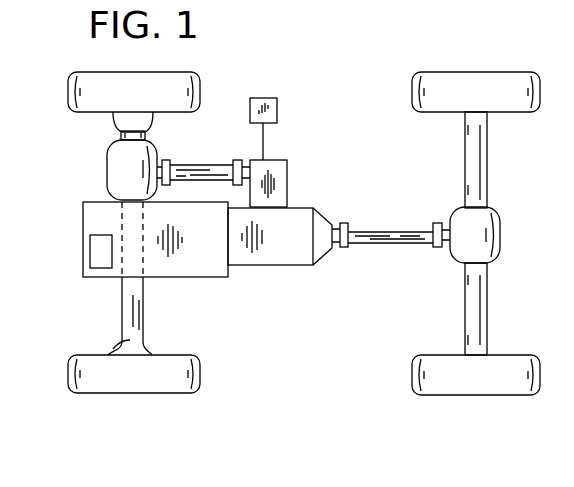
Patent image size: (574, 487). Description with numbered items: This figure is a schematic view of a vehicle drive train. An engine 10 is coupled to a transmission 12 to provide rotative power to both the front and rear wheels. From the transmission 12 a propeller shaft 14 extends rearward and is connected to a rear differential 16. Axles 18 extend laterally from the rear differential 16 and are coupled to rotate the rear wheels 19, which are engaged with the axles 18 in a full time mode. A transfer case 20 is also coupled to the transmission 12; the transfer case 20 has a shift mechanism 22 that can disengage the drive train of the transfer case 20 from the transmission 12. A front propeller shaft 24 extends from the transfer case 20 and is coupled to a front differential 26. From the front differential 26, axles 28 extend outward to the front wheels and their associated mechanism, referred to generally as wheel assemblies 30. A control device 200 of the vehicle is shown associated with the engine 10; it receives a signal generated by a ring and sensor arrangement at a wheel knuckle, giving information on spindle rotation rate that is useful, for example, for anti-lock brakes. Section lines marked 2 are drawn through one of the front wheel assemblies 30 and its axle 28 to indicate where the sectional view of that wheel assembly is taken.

The engine 10 is at (214, 246).
The transmission 12 is at (305, 250).
The propeller shaft 14 is at (383, 237).
The rear differential 16 is at (492, 238).
The axles 18 is at (478, 173).
The rear wheels 19 is at (412, 92).
The transfer case 20 is at (283, 188).
The shift mechanism 22 is at (277, 113).
The front propeller shaft 24 is at (205, 172).
The front differential 26 is at (118, 173).
The axles 28 is at (122, 135).
The wheel assemblies 30 is at (70, 93).
The control device 200 is at (93, 250).
The section line 2- 2 is at (143, 317).